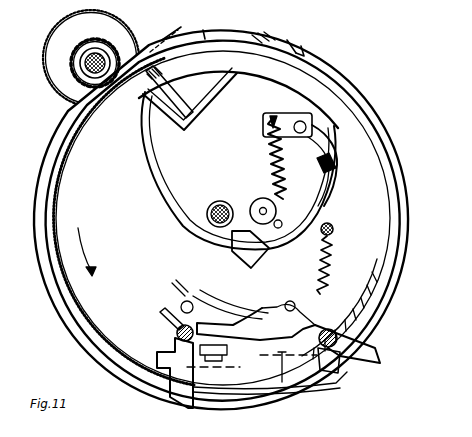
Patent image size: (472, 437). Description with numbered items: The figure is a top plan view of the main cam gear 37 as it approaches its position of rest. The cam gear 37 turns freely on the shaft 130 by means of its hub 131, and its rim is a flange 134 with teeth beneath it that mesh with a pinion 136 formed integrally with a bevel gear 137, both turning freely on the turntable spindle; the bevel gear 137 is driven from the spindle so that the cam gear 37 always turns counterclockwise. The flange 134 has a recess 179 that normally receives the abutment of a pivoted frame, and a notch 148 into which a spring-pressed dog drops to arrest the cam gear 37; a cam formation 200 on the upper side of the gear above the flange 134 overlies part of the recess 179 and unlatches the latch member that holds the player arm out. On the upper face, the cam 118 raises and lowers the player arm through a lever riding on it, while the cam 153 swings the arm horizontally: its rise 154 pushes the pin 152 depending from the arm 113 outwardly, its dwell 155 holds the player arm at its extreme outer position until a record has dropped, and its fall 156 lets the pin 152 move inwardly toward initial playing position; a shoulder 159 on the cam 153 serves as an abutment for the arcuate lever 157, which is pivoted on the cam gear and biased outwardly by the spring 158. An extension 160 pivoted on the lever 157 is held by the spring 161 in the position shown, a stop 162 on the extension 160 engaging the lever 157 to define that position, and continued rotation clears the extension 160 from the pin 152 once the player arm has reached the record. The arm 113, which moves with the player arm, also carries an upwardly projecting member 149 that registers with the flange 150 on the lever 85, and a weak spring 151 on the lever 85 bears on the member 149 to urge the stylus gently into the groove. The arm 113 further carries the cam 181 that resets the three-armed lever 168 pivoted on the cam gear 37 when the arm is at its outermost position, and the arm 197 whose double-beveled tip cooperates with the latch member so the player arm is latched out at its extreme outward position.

The cam gear 37 is at (366, 228).
The lever 85 is at (296, 386).
The arm 113 is at (312, 322).
The cam 118 is at (56, 196).
The shaft 130 is at (216, 204).
The hub 131 is at (250, 201).
The flange 134 is at (381, 120).
The pinion 136 is at (108, 44).
The bevel gear 137 is at (58, 34).
The notch 148 is at (304, 56).
The upwardly projecting member 149 is at (173, 340).
The flange 150 is at (190, 366).
The weak spring 151 is at (280, 373).
The depending pin 152 is at (176, 332).
The cam 153 is at (159, 207).
The rise 154 is at (145, 165).
The dwell 155 is at (248, 72).
The fall 156 is at (330, 143).
The arcuate lever 157 is at (330, 187).
The spring 158 is at (268, 154).
The shoulder 159 is at (330, 166).
The extension 160 is at (246, 294).
The spring 161 is at (331, 257).
The stop 162 is at (258, 308).
The three-armed lever 168 is at (146, 80).
The recess 179 is at (172, 38).
The cam 181 is at (159, 311).
The arm 197 is at (381, 345).
The cam formation 200 is at (249, 41).